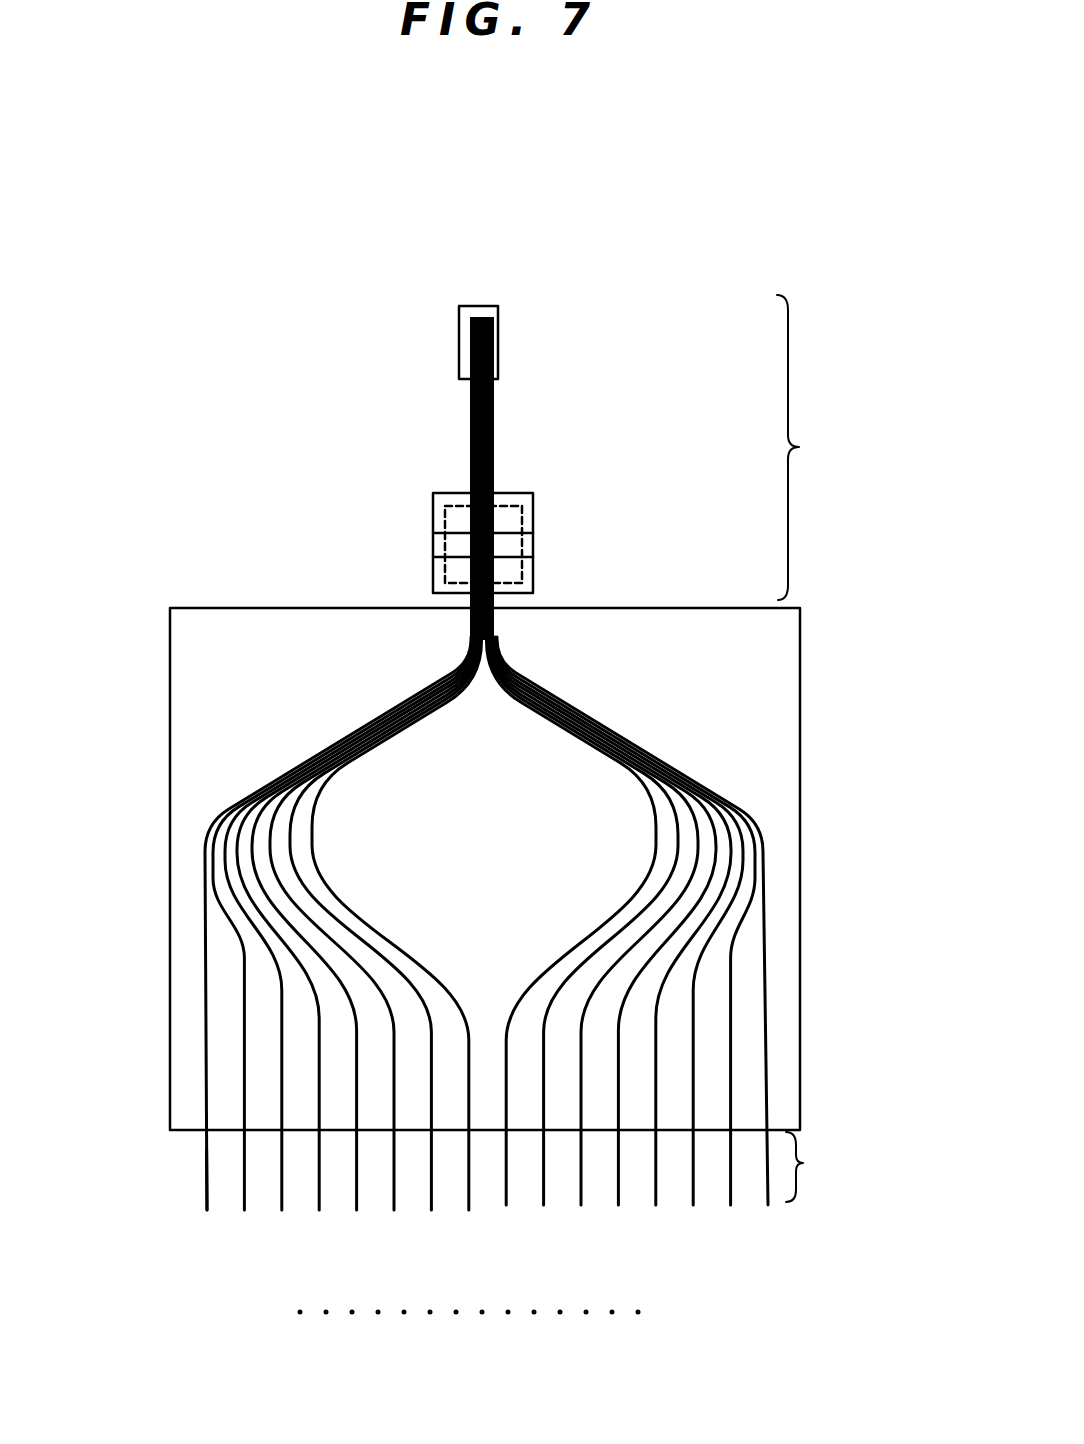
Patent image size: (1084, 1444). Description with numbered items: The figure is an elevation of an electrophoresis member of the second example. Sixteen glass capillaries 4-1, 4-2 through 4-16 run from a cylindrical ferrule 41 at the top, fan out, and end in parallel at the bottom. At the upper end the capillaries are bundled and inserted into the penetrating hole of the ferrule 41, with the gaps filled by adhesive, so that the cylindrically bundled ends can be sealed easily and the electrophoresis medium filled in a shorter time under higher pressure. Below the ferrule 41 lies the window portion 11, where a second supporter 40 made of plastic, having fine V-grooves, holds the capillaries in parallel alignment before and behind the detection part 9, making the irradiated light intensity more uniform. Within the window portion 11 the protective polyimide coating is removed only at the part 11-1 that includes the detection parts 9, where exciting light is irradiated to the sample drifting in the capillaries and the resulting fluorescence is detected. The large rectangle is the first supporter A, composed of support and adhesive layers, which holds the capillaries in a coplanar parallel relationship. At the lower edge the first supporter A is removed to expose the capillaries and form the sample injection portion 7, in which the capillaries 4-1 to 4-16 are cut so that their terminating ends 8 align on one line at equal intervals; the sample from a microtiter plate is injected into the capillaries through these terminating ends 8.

The cylindrical ferrule 41 is at (499, 332).
The second supporter 40 is at (532, 507).
The detection part 9 is at (473, 538).
The window portion part 11-1 is at (532, 570).
The window portion 11 is at (814, 447).
The first supporter A is at (773, 690).
The sample injection portion 7 is at (810, 1167).
The capillary 4-1 is at (207, 1160).
The terminating ends 8 is at (207, 1210).
The capillary 4-2 is at (245, 1190).
The capillary 4-16 is at (768, 1182).